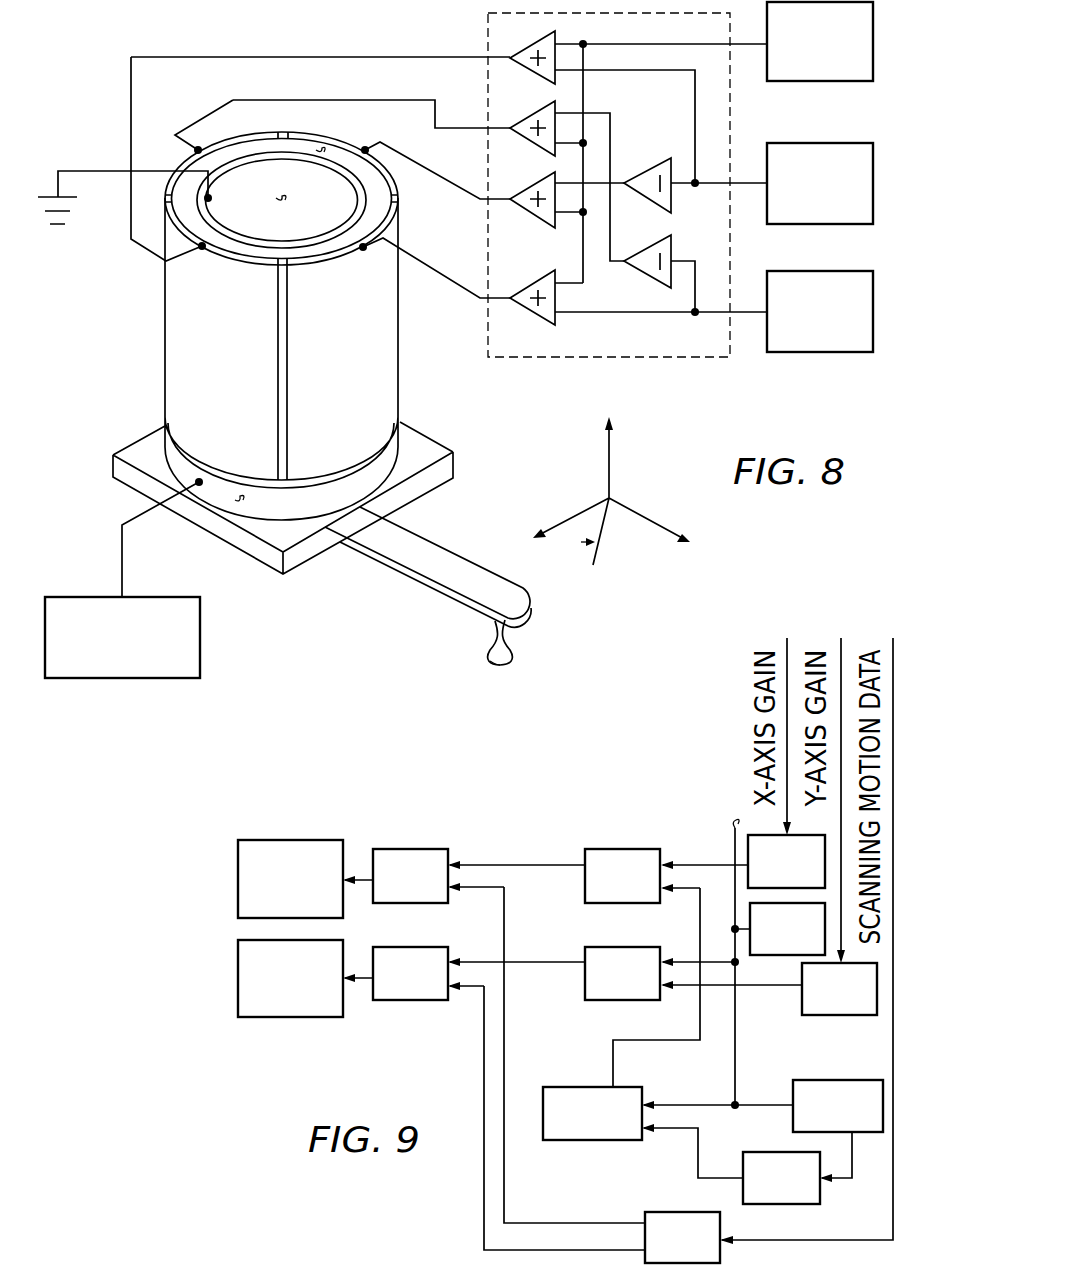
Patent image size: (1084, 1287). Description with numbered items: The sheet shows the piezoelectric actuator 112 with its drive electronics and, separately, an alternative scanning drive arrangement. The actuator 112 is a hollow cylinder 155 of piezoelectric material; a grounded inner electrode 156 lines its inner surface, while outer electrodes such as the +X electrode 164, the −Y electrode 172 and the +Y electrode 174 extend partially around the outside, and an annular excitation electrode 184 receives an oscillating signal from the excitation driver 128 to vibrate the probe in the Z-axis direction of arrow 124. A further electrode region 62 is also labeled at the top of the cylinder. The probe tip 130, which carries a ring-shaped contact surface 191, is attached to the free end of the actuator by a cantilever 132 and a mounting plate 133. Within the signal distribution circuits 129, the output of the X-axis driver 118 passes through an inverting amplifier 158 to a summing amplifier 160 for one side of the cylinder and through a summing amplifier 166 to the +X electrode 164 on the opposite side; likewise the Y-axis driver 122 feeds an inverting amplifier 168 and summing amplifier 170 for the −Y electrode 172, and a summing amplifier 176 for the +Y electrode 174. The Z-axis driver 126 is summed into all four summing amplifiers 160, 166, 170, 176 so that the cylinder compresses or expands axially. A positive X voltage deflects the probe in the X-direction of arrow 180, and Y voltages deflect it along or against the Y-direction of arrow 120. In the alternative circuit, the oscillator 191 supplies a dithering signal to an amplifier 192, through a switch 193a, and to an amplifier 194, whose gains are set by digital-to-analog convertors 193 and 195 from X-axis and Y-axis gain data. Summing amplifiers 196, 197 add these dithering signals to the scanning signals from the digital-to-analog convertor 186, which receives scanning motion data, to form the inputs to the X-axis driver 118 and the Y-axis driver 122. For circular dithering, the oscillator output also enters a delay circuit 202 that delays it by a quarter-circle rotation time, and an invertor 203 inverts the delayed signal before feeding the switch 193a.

In FIG. 8, the piezoelectric actuator 112 is at (150, 325).
In FIG. 8, the inner electrode ring 62 is at (330, 137).
In FIG. 8, the hollow cylinder 155 is at (320, 150).
In FIG. 8, the inner electrode 156 is at (282, 198).
In FIG. 8, the −Y electrode 172 is at (183, 163).
In FIG. 8, the +X electrode 164 is at (223, 262).
In FIG. 8, the +Y electrode 174 is at (390, 240).
In FIG. 8, the summing amplifier 166 is at (530, 47).
In FIG. 8, the summing amplifier 170 is at (525, 137).
In FIG. 8, the summing amplifier 160 is at (525, 208).
In FIG. 8, the summing amplifier 176 is at (530, 308).
In FIG. 8, the inverting amplifier 158 is at (653, 163).
In FIG. 8, the inverting amplifier 168 is at (643, 270).
In FIG. 8, the signal distribution circuits 129 is at (568, 360).
In FIG. 8, the Z-axis driver 126 is at (847, 83).
In FIG. 8, the X-axis driver 118 is at (847, 226).
In FIG. 9, the X-axis driver 118 is at (308, 840).
In FIG. 8, the Y-axis driver 122 is at (855, 355).
In FIG. 9, the Y-axis driver 122 is at (290, 1017).
In FIG. 8, the Z-axis direction arrow 124 is at (611, 463).
In FIG. 8, the X-direction arrow 180 is at (570, 518).
In FIG. 8, the Y-direction arrow 120 is at (650, 519).
In FIG. 8, the excitation driver 128 is at (97, 597).
In FIG. 8, the excitation electrode 184 is at (238, 497).
In FIG. 8, the mounting plate 133 is at (233, 550).
In FIG. 8, the cantilever 132 is at (400, 597).
In FIG. 8, the probe tip 130 is at (493, 633).
In FIG. 8, the oscillator 191 is at (495, 663).
In FIG. 9, the oscillator 191 is at (777, 955).
In FIG. 9, the summing amplifier 196 is at (423, 849).
In FIG. 9, the summing amplifier 197 is at (407, 1000).
In FIG. 9, the amplifier 192 is at (633, 849).
In FIG. 9, the amplifier 194 is at (598, 1000).
In FIG. 9, the digital-to-analog convertor 193 is at (780, 834).
In FIG. 9, the digital-to-analog convertor 195 is at (827, 1015).
In FIG. 9, the switch 193a is at (595, 1140).
In FIG. 9, the delay circuit 202 is at (792, 1120).
In FIG. 9, the invertor 203 is at (742, 1195).
In FIG. 9, the digital to analog convertor 186 is at (720, 1253).